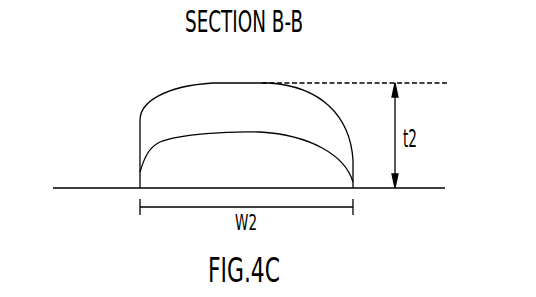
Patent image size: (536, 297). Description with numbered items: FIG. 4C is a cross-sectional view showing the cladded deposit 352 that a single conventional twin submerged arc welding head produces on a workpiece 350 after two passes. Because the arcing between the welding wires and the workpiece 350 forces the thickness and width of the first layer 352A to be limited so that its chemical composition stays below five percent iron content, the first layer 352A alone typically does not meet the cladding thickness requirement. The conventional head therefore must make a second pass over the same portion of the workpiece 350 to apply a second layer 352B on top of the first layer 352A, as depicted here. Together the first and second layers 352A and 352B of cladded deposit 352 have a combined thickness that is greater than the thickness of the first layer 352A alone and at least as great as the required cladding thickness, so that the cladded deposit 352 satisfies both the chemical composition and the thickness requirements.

The workpiece 350 is at (90, 188).
The cladded deposit 352 is at (272, 72).
The first layer 352A is at (160, 142).
The second layer 352B is at (178, 88).